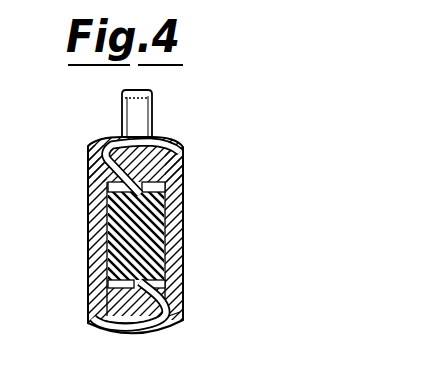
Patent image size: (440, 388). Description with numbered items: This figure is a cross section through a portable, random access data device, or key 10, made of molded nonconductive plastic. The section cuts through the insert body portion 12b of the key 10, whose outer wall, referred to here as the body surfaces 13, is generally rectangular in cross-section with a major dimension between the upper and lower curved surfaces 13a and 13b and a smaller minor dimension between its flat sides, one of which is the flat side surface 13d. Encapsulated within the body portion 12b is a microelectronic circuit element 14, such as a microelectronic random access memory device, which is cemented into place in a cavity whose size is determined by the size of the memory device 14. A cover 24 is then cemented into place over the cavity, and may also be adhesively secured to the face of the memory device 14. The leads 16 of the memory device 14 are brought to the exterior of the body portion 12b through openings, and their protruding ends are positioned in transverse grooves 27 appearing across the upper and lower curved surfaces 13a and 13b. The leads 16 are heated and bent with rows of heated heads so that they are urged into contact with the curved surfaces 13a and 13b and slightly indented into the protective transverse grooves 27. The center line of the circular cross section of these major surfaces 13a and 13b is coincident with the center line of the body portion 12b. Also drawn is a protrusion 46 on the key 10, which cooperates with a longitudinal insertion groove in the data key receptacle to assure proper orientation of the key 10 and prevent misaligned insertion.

The key 10 is at (82, 317).
The insert body portion 12b is at (185, 304).
The housing 13 is at (92, 299).
The upper curved surface 13a is at (105, 148).
The lower curved surface 13b is at (191, 253).
The flat side surface 13d is at (185, 218).
The microelectronic circuit element 14 is at (158, 246).
The leads 16 is at (166, 188).
The cover 24 is at (93, 245).
The transverse grooves 27 is at (172, 148).
The protrusion 46 is at (142, 112).